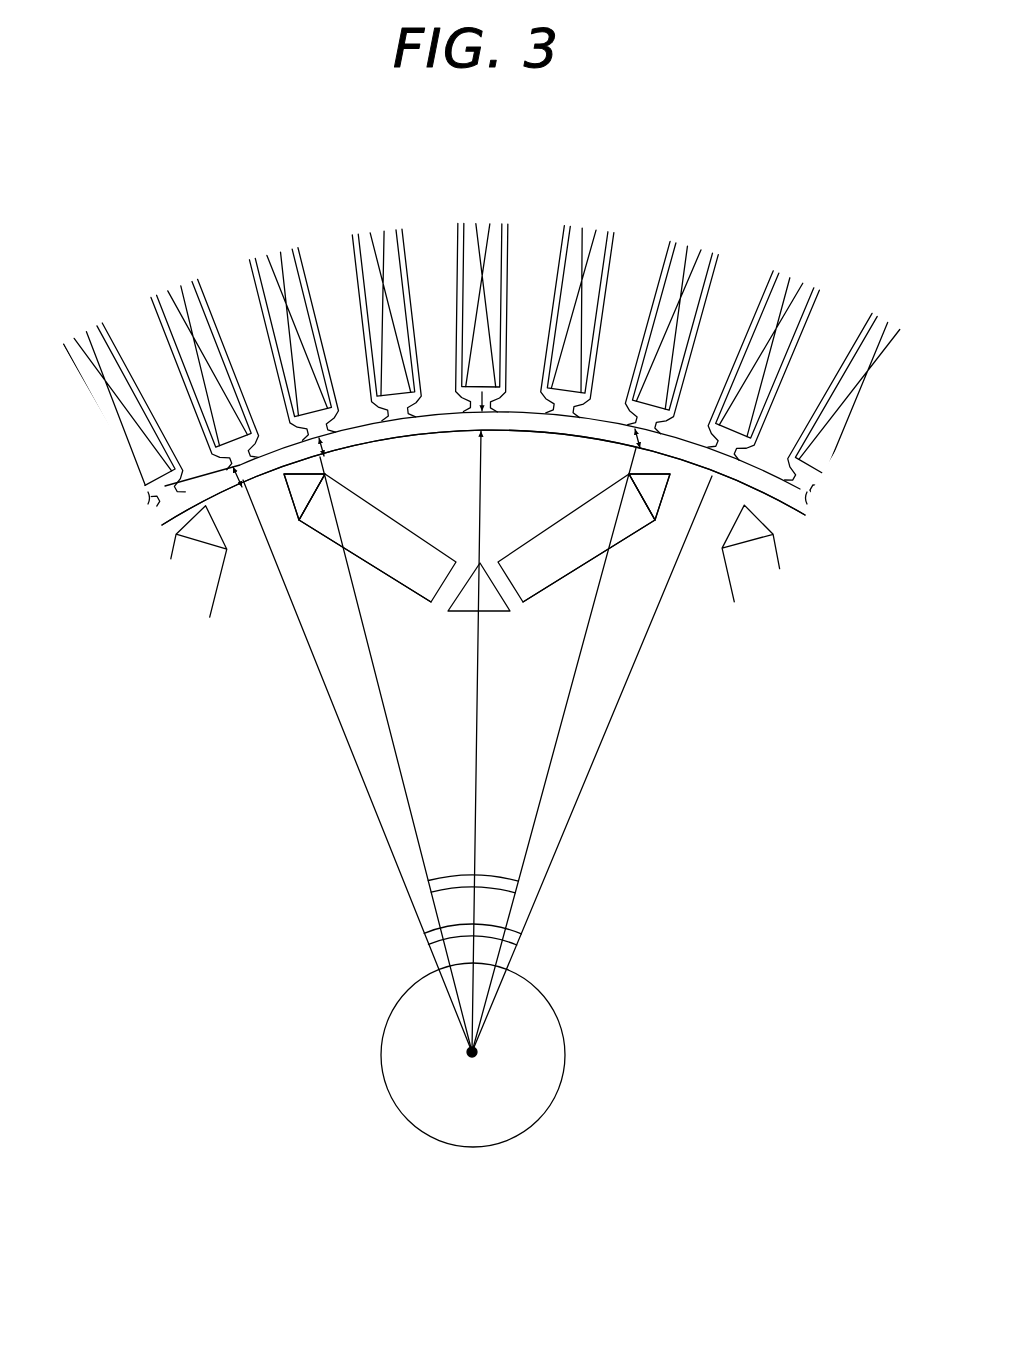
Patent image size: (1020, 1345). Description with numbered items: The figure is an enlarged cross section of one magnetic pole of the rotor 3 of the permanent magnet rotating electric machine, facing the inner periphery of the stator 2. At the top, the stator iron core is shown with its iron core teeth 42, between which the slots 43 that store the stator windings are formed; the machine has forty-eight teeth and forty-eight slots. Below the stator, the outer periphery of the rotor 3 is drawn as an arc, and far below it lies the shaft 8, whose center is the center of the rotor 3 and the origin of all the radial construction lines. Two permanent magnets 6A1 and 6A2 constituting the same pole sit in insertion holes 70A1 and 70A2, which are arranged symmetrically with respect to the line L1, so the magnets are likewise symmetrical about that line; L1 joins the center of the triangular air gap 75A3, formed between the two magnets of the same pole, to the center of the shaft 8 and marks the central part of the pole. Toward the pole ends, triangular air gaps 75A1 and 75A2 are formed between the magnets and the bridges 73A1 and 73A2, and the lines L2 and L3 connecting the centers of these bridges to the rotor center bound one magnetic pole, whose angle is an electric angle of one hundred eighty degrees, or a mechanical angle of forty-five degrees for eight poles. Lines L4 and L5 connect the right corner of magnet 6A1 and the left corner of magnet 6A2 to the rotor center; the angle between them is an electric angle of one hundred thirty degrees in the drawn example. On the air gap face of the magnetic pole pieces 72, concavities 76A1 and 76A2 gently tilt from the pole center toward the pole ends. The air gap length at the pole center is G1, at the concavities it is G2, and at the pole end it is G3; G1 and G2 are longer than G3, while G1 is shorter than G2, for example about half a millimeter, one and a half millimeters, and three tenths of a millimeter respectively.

The stator 2 is at (530, 250).
The rotor 3 is at (662, 910).
The shaft 8 is at (558, 1066).
The iron core teeth 42 is at (430, 258).
The slots 43 is at (380, 237).
The magnetic pole pieces 72 is at (543, 530).
The permanent magnet 6A1 is at (545, 585).
The permanent magnet 6A2 is at (408, 580).
The insertion hole 70A1 is at (623, 540).
The insertion hole 70A2 is at (372, 566).
The bridge 73A1 is at (762, 558).
The bridge 73A2 is at (250, 545).
The triangular air gap 75A1 is at (656, 492).
The triangular air gap 75A2 is at (297, 493).
The triangular air gap 75A3 is at (462, 612).
The concavity 76A1 is at (633, 462).
The concavity 76A2 is at (322, 486).
The air gap length G1 is at (483, 432).
The air gap length G2 is at (330, 447).
The air gap length G3 is at (240, 488).
The line L1 is at (483, 722).
The line L2 is at (372, 798).
The line L3 is at (588, 790).
The line L4 is at (420, 850).
The line L5 is at (530, 845).